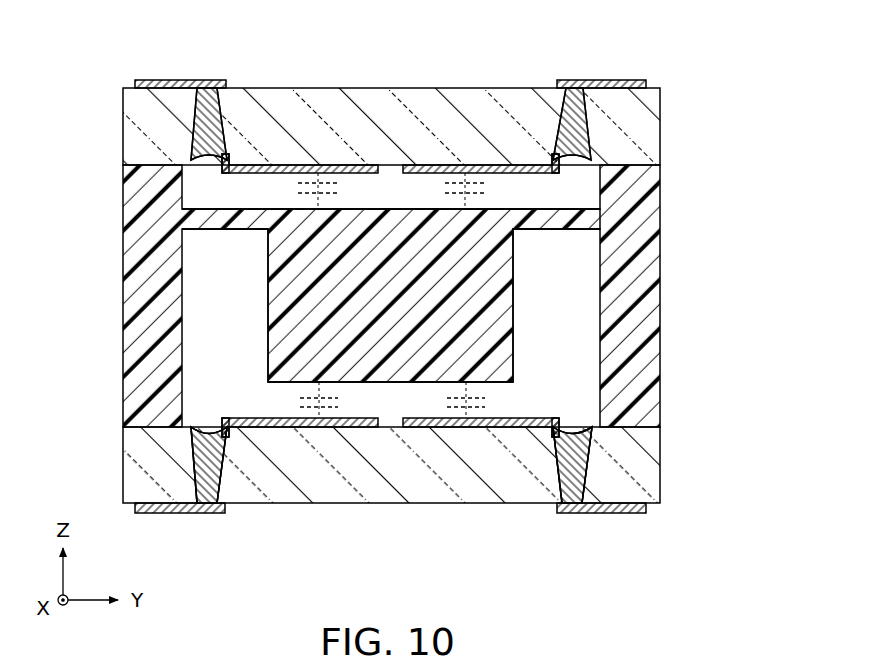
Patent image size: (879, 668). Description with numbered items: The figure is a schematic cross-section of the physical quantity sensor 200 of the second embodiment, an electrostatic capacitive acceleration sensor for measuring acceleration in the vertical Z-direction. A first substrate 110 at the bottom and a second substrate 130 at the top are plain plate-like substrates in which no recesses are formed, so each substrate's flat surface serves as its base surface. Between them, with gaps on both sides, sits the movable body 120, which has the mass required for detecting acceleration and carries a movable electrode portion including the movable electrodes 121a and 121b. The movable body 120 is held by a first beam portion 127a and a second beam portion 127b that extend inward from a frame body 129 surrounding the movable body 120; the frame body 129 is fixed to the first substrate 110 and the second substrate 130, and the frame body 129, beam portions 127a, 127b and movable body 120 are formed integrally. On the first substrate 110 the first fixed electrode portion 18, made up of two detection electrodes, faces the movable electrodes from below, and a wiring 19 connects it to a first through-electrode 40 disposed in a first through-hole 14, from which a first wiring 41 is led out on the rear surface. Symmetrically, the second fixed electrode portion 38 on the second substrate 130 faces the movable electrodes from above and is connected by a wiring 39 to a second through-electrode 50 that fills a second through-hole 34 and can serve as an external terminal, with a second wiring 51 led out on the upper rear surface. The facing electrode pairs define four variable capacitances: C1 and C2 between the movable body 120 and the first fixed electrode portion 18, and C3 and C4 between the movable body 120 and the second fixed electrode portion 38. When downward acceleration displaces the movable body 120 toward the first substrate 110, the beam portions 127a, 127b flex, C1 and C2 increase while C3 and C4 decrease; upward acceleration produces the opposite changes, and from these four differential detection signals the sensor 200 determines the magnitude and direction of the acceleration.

The physical quantity sensor 200 is at (406, 290).
The second substrate 130 is at (640, 134).
The first substrate 110 is at (645, 462).
The frame body 129 is at (155, 284).
The movable body 120 is at (391, 297).
The first beam portion 127a is at (552, 216).
The second beam portion 127b is at (225, 216).
The movable electrode 121a is at (285, 380).
The movable electrode 121b is at (400, 235).
The second through-hole 34 is at (198, 94).
The second through-electrode 50 is at (214, 88).
The second wiring 51 is at (153, 80).
The first through-hole 14 is at (198, 505).
The first through-electrode 40 is at (216, 506).
The first wiring 41 is at (172, 513).
The second fixed electrode portion 38 is at (310, 164).
The wiring 39 is at (245, 163).
The first fixed electrode portion 18 is at (325, 428).
The wiring 19 is at (258, 428).
The variable capacitance C1 is at (481, 400).
The variable capacitance C2 is at (335, 400).
The variable capacitance C3 is at (481, 191).
The variable capacitance C4 is at (334, 191).